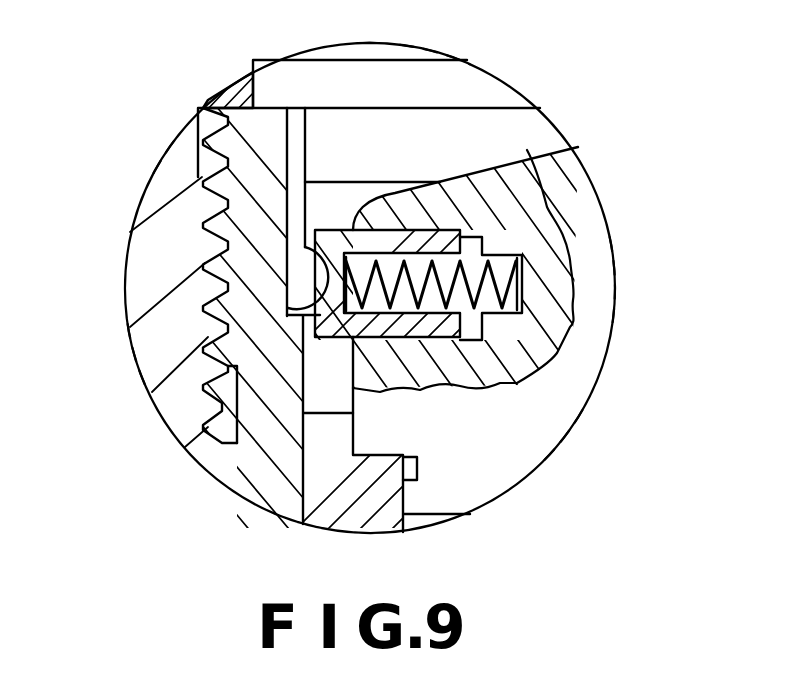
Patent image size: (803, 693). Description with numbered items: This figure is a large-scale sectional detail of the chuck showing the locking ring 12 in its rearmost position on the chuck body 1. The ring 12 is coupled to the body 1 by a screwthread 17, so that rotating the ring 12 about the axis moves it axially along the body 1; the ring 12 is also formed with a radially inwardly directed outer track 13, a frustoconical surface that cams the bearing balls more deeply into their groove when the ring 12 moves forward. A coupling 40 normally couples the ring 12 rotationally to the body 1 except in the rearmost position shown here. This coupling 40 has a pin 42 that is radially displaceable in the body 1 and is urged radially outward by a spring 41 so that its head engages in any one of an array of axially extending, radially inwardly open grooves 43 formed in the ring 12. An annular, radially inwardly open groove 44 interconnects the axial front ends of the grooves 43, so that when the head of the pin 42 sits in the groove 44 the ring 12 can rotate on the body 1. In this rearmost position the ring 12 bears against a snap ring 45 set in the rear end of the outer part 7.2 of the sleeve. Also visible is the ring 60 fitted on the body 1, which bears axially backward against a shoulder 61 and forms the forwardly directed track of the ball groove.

The chuck body 1 is at (515, 205).
The outer part 7.2 is at (168, 322).
The locking ring 12 is at (255, 443).
The outer track 13 is at (287, 518).
The screwthread 17 is at (210, 280).
The coupling 40 is at (414, 222).
The spring 41 is at (467, 277).
The pin 42 is at (397, 323).
The axially extending grooves 43 is at (295, 155).
The annular groove 44 is at (312, 325).
The snap ring 45 is at (238, 92).
The ring 60 is at (363, 497).
The shoulder 61 is at (385, 447).